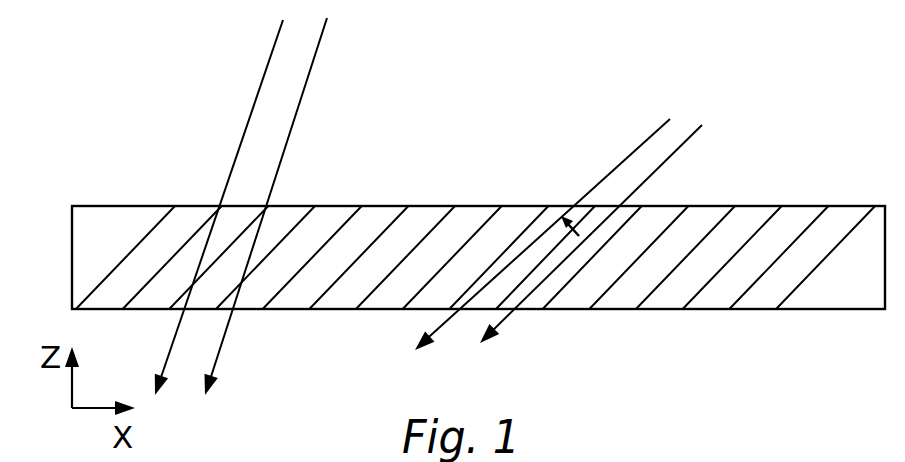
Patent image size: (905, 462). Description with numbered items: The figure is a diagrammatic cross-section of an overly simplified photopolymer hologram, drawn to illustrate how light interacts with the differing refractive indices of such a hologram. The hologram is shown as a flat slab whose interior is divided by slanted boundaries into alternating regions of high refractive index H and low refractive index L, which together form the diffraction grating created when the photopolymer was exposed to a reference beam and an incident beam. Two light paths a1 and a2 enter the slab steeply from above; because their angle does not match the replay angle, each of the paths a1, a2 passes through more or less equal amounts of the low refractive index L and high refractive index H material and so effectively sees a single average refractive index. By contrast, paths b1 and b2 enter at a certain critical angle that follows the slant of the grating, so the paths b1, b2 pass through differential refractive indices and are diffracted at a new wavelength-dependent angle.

The path a1 is at (219, 207).
The path a2 is at (288, 206).
The path b1 is at (542, 234).
The path b2 is at (612, 232).
The high refractive index H is at (449, 270).
The low refractive index L is at (496, 270).